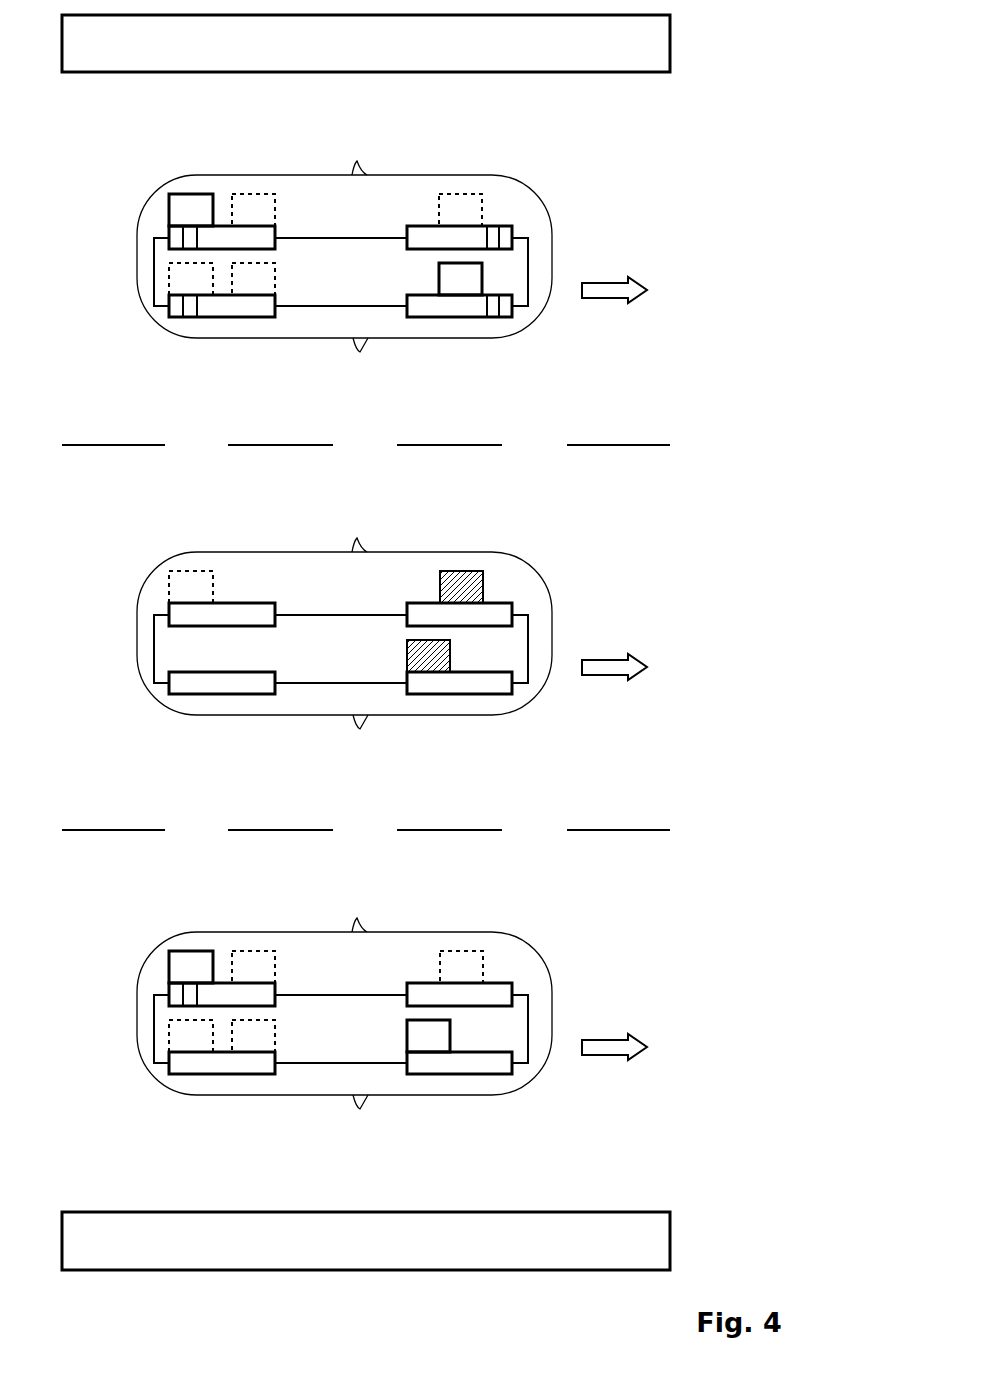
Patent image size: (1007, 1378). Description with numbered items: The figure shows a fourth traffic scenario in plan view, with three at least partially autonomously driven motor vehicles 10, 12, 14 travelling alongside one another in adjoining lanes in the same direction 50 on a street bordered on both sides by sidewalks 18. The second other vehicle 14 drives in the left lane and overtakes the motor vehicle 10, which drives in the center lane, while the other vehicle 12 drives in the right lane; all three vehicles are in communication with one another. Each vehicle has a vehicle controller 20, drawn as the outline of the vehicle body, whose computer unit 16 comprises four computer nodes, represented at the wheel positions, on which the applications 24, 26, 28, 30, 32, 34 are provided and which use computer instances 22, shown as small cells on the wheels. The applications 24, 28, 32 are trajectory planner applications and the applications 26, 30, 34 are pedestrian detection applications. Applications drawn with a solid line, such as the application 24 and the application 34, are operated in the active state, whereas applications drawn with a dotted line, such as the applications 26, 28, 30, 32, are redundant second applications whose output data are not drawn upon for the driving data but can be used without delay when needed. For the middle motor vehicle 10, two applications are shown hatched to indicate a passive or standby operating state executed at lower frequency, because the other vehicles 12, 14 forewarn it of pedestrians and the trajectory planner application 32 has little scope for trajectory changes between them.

The motor vehicle 10 is at (161, 568).
The other vehicle 12 is at (161, 948).
The second other vehicle 14 is at (161, 191).
The computer unit 16 is at (272, 214).
The sidewalks 18 is at (670, 42).
The vehicle controller 20 is at (519, 170).
The computer instances 22 is at (178, 243).
The trajectory planner application 24 is at (188, 194).
The pedestrian detection application 26 is at (250, 194).
The trajectory planner application 28 is at (168, 278).
The pedestrian detection application 30 is at (250, 278).
The trajectory planner application 32 is at (458, 194).
The pedestrian detection application 34 is at (482, 278).
The direction 50 is at (622, 300).